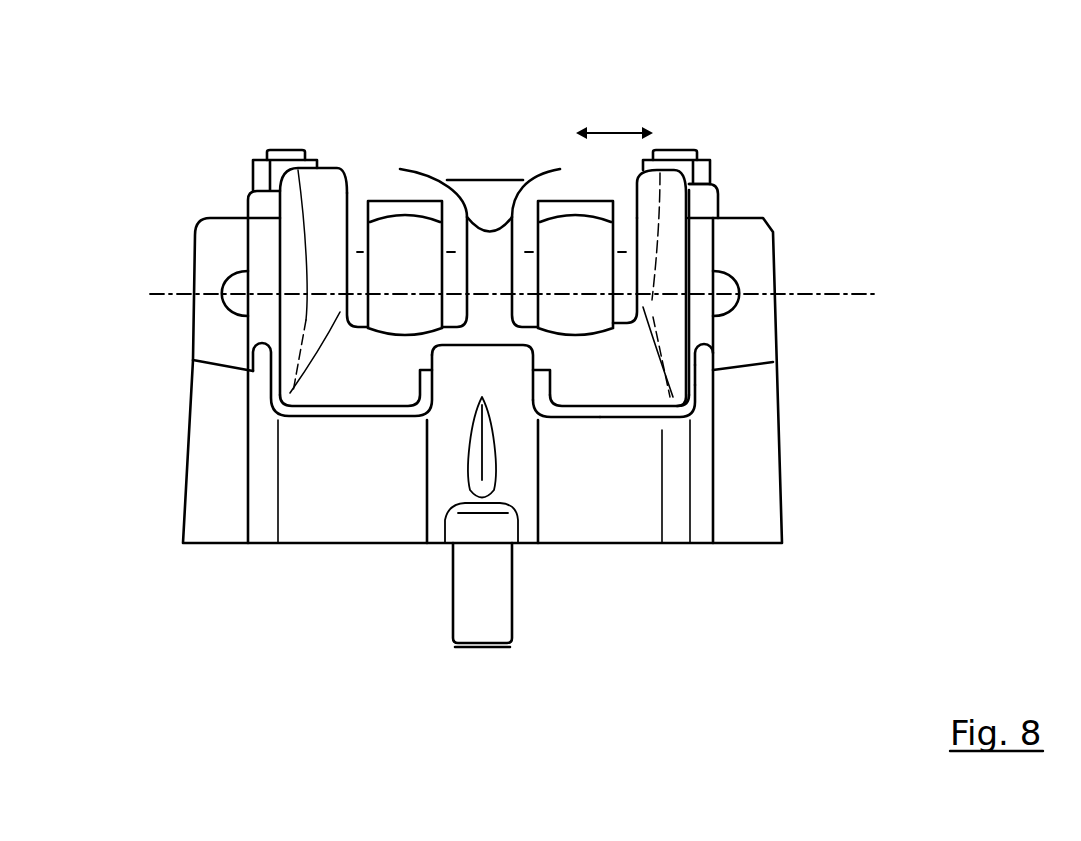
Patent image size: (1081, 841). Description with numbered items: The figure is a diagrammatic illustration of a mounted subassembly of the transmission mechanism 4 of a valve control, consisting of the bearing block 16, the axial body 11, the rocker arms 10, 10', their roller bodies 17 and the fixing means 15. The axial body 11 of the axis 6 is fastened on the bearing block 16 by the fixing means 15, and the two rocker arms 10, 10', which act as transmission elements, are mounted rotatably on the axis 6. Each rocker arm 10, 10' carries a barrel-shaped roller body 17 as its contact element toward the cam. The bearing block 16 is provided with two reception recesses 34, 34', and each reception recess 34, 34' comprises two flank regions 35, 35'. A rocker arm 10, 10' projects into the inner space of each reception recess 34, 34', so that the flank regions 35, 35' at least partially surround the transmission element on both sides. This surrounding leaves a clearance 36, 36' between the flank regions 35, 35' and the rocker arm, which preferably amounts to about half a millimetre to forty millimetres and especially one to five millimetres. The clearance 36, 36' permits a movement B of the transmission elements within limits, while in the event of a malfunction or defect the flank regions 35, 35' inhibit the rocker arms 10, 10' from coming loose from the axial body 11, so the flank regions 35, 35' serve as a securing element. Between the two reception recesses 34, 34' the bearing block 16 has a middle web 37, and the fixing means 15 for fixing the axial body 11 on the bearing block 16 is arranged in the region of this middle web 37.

The transmission mechanism 4 is at (683, 133).
The axis 6 is at (830, 294).
The rocker arm 10 is at (746, 212).
The rocker arm 10' is at (226, 249).
The axial body 11 is at (733, 262).
The fixing means 15 is at (487, 205).
The bearing block 16 is at (648, 522).
The roller body 17 is at (577, 267).
The movement B is at (615, 127).
The reception recess 34 is at (772, 372).
The reception recess 34' is at (610, 413).
The flank region 35 is at (827, 286).
The flank region 35' is at (750, 401).
The clearance 36 is at (797, 341).
The clearance 36' is at (828, 292).
The middle web 37 is at (485, 377).